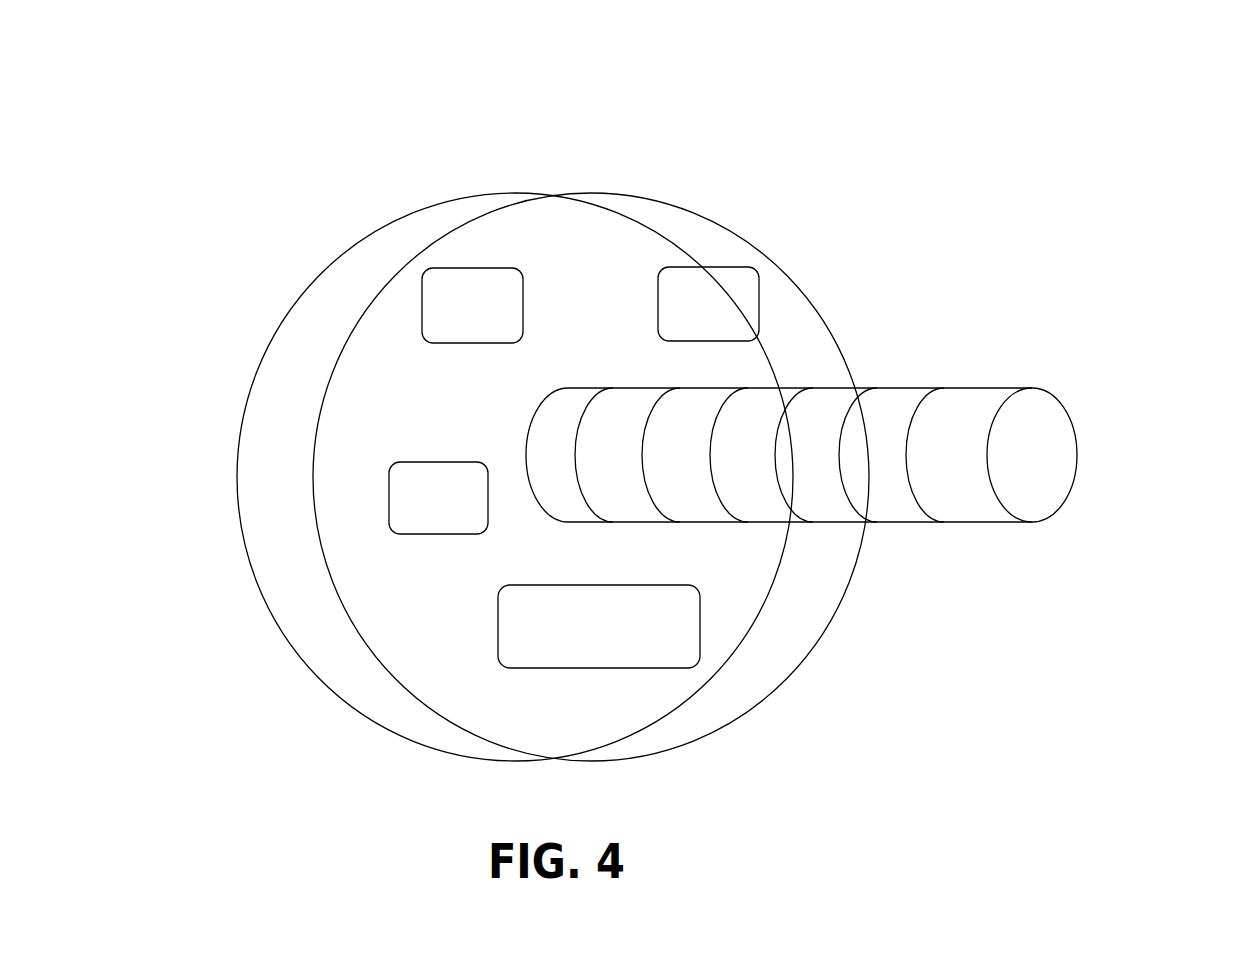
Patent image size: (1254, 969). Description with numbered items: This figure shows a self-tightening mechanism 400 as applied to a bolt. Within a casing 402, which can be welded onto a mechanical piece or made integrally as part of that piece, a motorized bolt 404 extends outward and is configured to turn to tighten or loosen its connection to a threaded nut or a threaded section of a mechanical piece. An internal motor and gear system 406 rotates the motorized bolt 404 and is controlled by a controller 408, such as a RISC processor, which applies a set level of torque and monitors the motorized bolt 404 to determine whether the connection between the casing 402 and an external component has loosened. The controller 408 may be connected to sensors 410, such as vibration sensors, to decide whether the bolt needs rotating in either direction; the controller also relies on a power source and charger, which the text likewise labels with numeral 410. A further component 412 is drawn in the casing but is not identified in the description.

The self-tightening mechanism 400 is at (1073, 81).
The casing 402 is at (441, 179).
The motorized bolt 404 is at (511, 451).
The internal motor and gear system 406 is at (700, 248).
The controller 408 is at (409, 269).
The sensors 410 is at (370, 499).
The elongated port / slot 412 is at (718, 625).